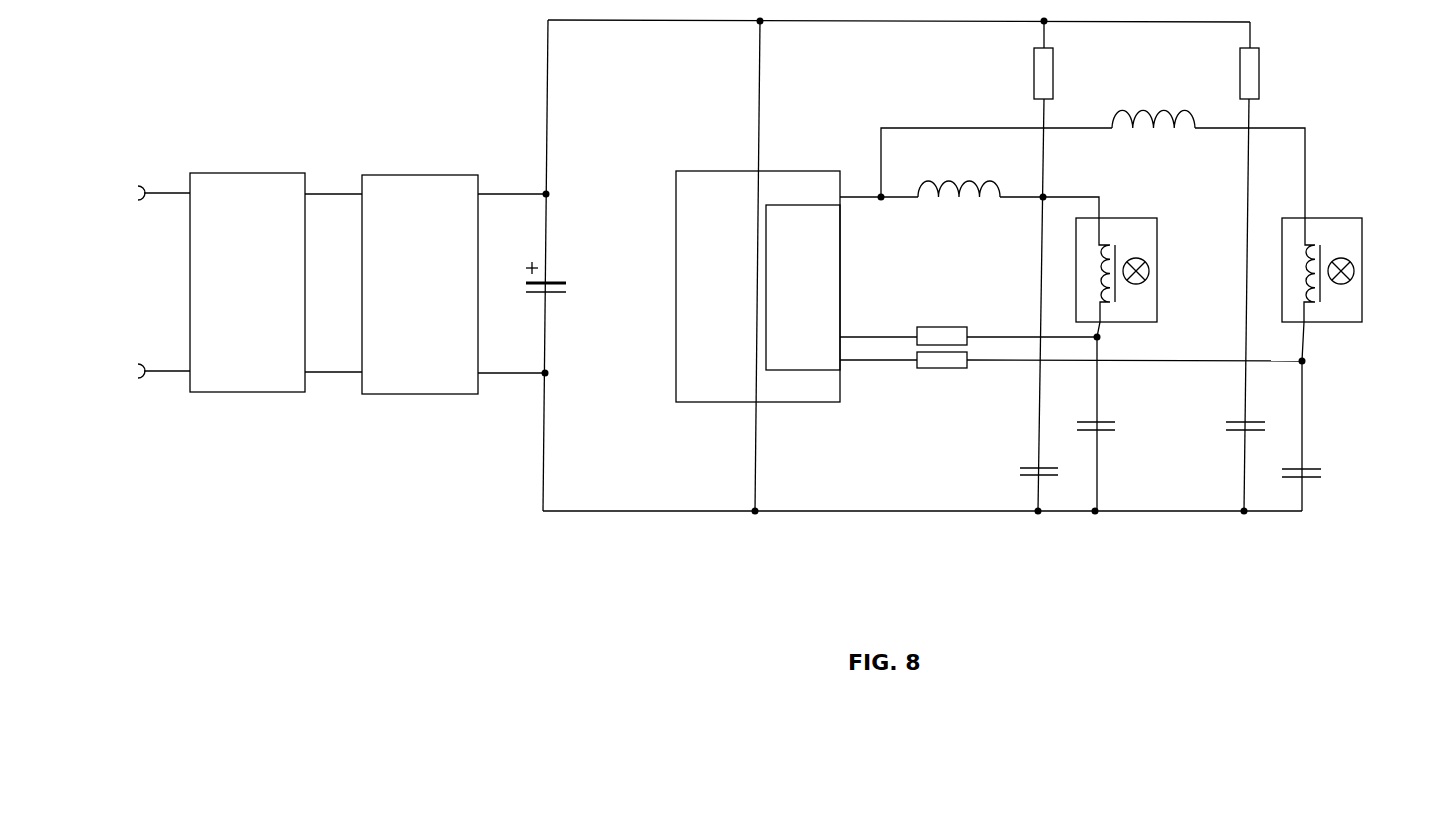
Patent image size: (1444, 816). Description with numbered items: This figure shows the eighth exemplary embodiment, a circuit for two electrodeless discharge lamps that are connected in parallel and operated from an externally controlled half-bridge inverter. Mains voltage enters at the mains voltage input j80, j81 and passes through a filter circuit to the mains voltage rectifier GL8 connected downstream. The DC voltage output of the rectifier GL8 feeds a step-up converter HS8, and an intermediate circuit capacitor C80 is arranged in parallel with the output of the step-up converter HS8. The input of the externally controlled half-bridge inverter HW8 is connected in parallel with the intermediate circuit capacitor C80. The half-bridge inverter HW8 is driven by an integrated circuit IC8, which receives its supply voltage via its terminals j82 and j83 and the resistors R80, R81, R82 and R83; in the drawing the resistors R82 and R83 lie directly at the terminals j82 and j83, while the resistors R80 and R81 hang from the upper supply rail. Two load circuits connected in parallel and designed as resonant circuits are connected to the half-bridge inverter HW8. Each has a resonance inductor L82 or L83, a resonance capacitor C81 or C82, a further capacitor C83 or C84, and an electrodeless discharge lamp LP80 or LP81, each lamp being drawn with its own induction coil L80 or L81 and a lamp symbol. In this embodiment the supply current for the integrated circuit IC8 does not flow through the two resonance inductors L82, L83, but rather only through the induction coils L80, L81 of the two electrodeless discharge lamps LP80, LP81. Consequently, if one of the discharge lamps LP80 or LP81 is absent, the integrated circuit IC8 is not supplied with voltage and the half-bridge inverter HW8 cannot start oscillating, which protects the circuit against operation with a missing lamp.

The mains voltage input terminal j80 is at (157, 179).
The mains voltage input terminal j81 is at (156, 388).
The mains voltage rectifier GL8 is at (276, 282).
The step-up converter HS8 is at (454, 284).
The intermediate circuit capacitor C80 is at (567, 293).
The externally controlled half-bridge inverter HW8 is at (758, 286).
The integrated circuit IC8 is at (803, 287).
The supply terminal of integrated circuit j82 is at (878, 322).
The supply terminal of integrated circuit j83 is at (878, 374).
The resistor R82 is at (1007, 323).
The resistor R83 is at (1109, 373).
The resonance inductor L83 is at (1003, 171).
The resonance inductor L82 is at (1197, 103).
The resistor R80 is at (1069, 266).
The resistor R81 is at (1275, 266).
The electrodeless discharge lamp LP80 is at (1150, 270).
The electrodeless discharge lamp LP81 is at (1354, 270).
The induction coil of discharge lamp L80 is at (1110, 303).
The induction coil of discharge lamp L81 is at (1315, 303).
The capacitor C83 is at (1025, 458).
The further capacitor C84 is at (1111, 414).
The resonance capacitor C81 is at (1261, 414).
The resonance capacitor C82 is at (1316, 487).